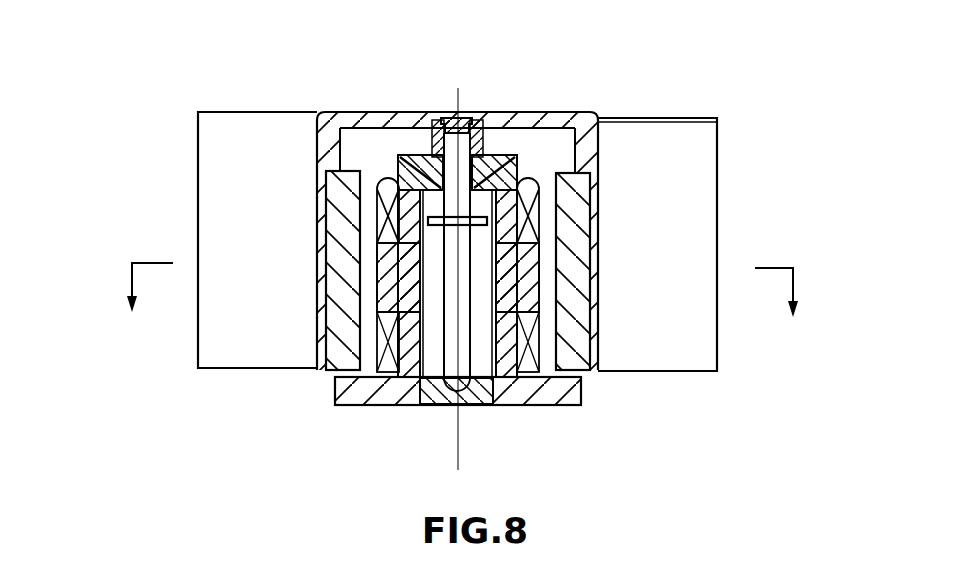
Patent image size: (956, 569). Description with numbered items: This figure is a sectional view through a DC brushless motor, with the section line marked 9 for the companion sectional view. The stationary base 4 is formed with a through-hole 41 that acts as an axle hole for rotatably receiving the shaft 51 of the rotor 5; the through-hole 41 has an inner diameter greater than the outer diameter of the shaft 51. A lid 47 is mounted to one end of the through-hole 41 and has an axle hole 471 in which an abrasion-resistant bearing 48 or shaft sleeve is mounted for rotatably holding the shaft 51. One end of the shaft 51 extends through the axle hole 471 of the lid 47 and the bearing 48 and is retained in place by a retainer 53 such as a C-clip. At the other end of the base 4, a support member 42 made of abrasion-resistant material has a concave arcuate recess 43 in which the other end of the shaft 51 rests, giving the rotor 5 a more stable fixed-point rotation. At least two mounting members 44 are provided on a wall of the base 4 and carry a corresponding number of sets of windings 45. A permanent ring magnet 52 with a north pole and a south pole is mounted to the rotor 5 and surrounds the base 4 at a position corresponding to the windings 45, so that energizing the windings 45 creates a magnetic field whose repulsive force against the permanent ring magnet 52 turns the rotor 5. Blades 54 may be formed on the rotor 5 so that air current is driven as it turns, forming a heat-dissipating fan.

The base 4 is at (396, 192).
The through-hole 41 is at (497, 156).
The support member 42 is at (440, 380).
The arcuate recess 43 is at (458, 408).
The mounting member 44 is at (387, 282).
The windings 45 is at (387, 368).
The lid 47 is at (400, 160).
The axle hole 471 is at (468, 124).
The bearing 48 is at (437, 155).
The rotor 5 is at (480, 152).
The shaft 51 is at (467, 360).
The permanent ring magnet 52 is at (575, 357).
The retainer 53 is at (585, 226).
The blades 54 is at (680, 128).
The section line 9- 9 is at (465, 310).